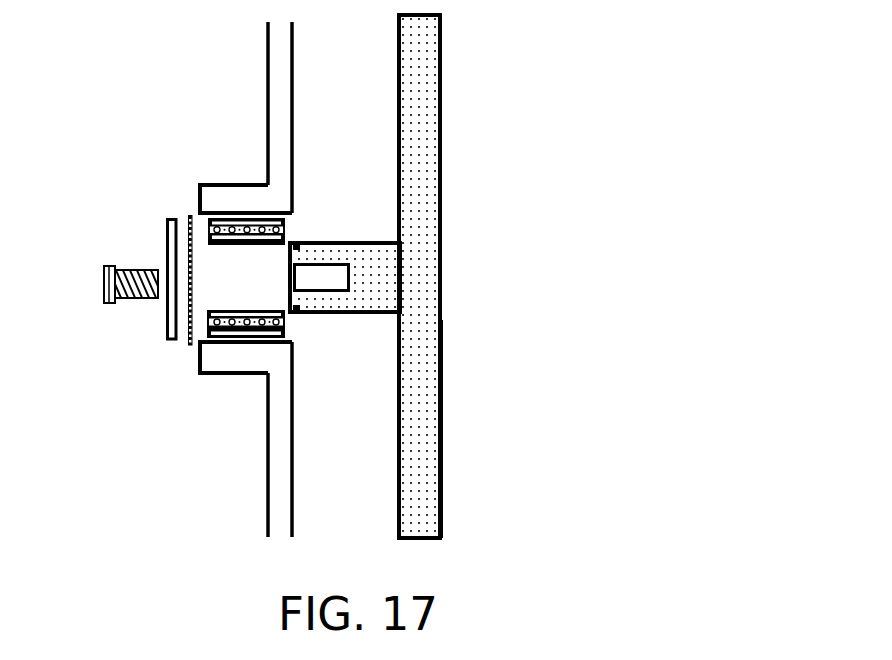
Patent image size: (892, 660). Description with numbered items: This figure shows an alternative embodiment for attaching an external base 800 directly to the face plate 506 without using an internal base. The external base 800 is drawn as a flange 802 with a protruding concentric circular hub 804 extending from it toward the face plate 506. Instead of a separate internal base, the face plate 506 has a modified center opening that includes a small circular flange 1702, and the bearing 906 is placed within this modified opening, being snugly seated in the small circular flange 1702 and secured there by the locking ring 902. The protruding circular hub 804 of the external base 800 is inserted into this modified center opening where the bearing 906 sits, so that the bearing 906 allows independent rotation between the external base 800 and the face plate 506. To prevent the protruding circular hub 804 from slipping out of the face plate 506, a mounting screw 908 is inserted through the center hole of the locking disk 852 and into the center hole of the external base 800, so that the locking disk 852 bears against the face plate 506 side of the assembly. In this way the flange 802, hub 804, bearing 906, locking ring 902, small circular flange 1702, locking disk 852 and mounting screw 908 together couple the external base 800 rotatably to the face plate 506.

The face plate 506 is at (273, 100).
The external base 800 is at (442, 102).
The flange 802 is at (442, 475).
The protruding circular hub 804 is at (373, 290).
The locking disk 852 is at (166, 315).
The locking ring 902 is at (188, 345).
The bearing 906 is at (285, 330).
The mounting screw 908 is at (147, 270).
The small circular flange 1702 is at (200, 197).